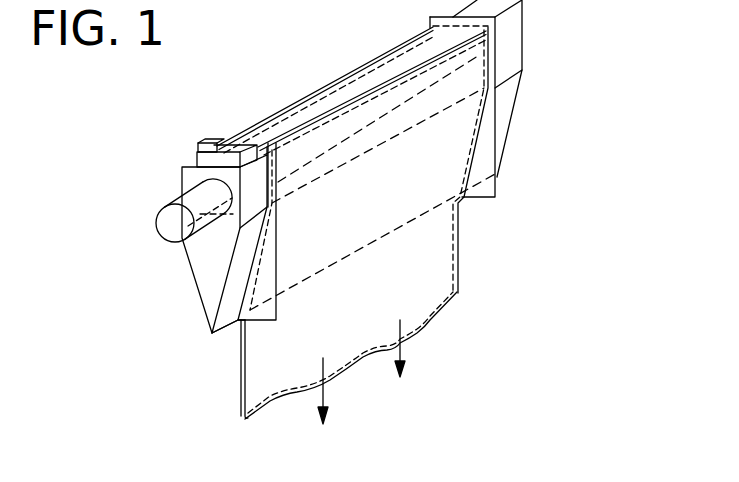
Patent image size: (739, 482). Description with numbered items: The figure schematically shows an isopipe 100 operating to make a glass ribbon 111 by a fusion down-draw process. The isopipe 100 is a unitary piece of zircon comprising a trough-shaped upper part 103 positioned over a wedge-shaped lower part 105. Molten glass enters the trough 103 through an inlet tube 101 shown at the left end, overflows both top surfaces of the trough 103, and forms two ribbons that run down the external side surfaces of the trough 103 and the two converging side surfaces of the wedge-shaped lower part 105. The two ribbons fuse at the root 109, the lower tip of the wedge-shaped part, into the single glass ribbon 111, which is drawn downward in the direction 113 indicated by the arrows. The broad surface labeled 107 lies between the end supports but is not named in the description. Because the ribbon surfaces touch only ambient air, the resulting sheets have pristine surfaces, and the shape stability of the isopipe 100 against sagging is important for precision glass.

The isopipe 100 is at (550, 54).
The inlet tube 101 is at (172, 226).
The trough-shaped upper part 103 is at (317, 138).
The wedge-shaped lower part 105 is at (509, 147).
The panel 107 is at (393, 198).
The root 109 is at (232, 328).
The glass ribbon 111 is at (295, 370).
The direction 113 is at (406, 351).